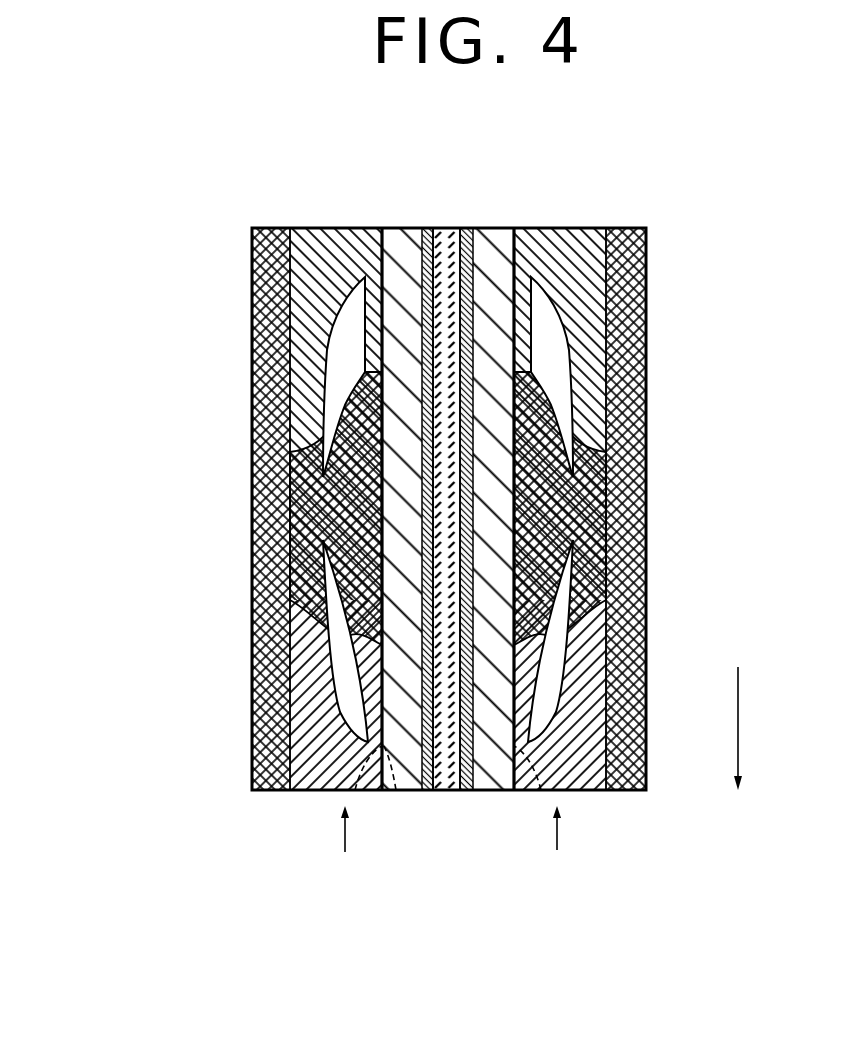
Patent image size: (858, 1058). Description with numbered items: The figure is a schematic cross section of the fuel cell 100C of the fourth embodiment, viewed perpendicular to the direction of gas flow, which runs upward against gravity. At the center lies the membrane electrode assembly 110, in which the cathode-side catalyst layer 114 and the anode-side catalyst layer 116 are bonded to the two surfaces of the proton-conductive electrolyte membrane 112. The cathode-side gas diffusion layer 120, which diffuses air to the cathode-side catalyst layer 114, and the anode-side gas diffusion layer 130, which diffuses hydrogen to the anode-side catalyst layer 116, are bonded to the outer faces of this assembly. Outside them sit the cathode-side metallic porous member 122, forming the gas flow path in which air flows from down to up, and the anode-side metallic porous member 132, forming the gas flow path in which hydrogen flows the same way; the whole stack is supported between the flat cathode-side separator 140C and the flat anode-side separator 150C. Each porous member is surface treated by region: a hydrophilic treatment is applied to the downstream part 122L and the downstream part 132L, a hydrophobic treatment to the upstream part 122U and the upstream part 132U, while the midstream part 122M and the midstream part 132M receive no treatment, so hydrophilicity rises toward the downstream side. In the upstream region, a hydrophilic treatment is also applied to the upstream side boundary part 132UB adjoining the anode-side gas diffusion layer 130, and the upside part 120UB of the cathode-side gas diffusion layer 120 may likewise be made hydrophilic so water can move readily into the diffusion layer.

The fuel cell 100C is at (238, 127).
The membrane electrode assembly 110 is at (447, 453).
The electrolyte membrane 112 is at (446, 228).
The cathode-side catalyst layer 114 is at (422, 228).
The anode-side catalyst layer 116 is at (493, 474).
The cathode-side gas diffusion layer 120 is at (382, 228).
The cathode-side metallic porous member 122 is at (308, 228).
The downstream part 122L is at (256, 334).
The midstream part 122M is at (253, 510).
The upstream part 122U is at (253, 693).
The anode-side gas diffusion layer 130 is at (514, 228).
The anode-side metallic porous member 132 is at (585, 228).
The downstream part 132L is at (671, 320).
The midstream part 132M is at (668, 497).
The upstream part 132U is at (668, 683).
The upstream side boundary part 132UB is at (365, 790).
The upside part 120UB is at (395, 790).
The cathode-side separator 140C is at (252, 228).
The anode-side separator 150C is at (640, 228).